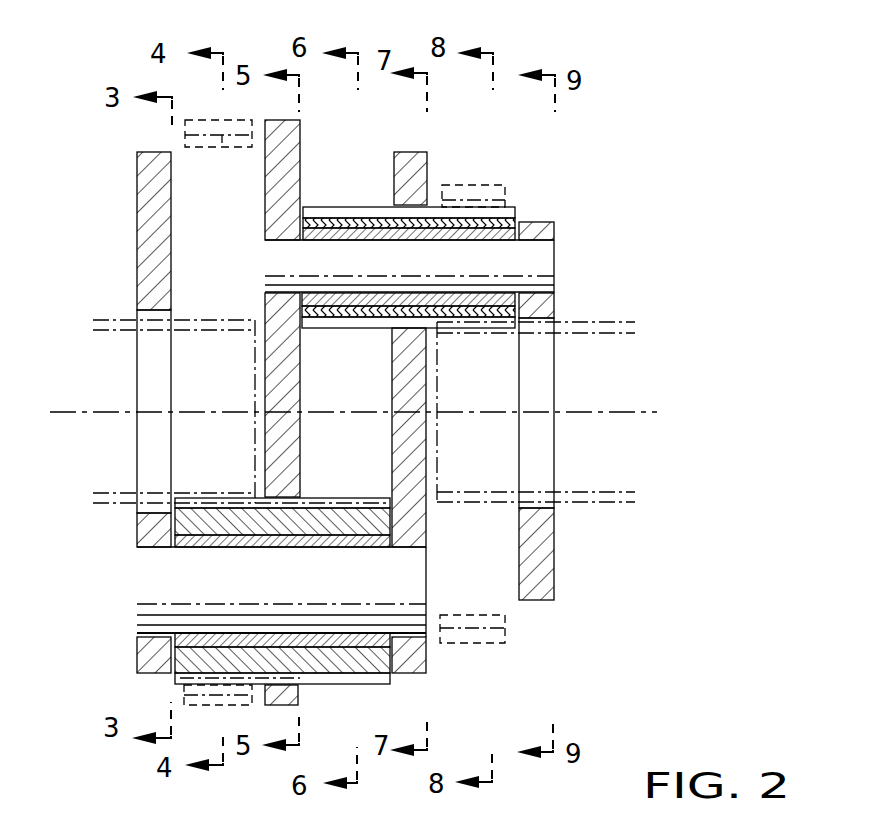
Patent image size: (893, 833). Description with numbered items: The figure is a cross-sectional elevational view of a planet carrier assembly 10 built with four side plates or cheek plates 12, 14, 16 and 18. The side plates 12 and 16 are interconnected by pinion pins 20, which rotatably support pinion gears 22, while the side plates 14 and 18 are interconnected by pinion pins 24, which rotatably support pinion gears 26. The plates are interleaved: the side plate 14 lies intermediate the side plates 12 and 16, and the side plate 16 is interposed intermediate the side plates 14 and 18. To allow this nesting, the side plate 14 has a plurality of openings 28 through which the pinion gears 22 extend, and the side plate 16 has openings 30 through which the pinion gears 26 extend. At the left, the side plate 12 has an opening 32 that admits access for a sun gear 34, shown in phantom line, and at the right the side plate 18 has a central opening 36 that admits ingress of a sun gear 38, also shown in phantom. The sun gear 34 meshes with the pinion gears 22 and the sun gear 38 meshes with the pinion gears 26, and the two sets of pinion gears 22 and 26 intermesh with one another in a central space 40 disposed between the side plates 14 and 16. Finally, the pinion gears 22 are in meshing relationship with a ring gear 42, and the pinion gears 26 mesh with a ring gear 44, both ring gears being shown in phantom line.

The planet carrier assembly 10 is at (647, 203).
The side plate 12 is at (144, 186).
The side plate 14 is at (293, 146).
The side plate 16 is at (411, 158).
The side plate 18 is at (549, 222).
The pinion pins 20 is at (157, 573).
The pinion gears 22 is at (190, 523).
The pinion pins 24 is at (540, 258).
The pinion gears 26 is at (515, 208).
The openings 28 is at (298, 684).
The openings 30 is at (390, 207).
The opening 32 is at (152, 310).
The sun gear 34 is at (113, 320).
The central opening 36 is at (535, 508).
The sun gear 38 is at (585, 505).
The central space 40 is at (361, 385).
The ring gear 42 is at (222, 147).
The ring gear 44 is at (478, 190).